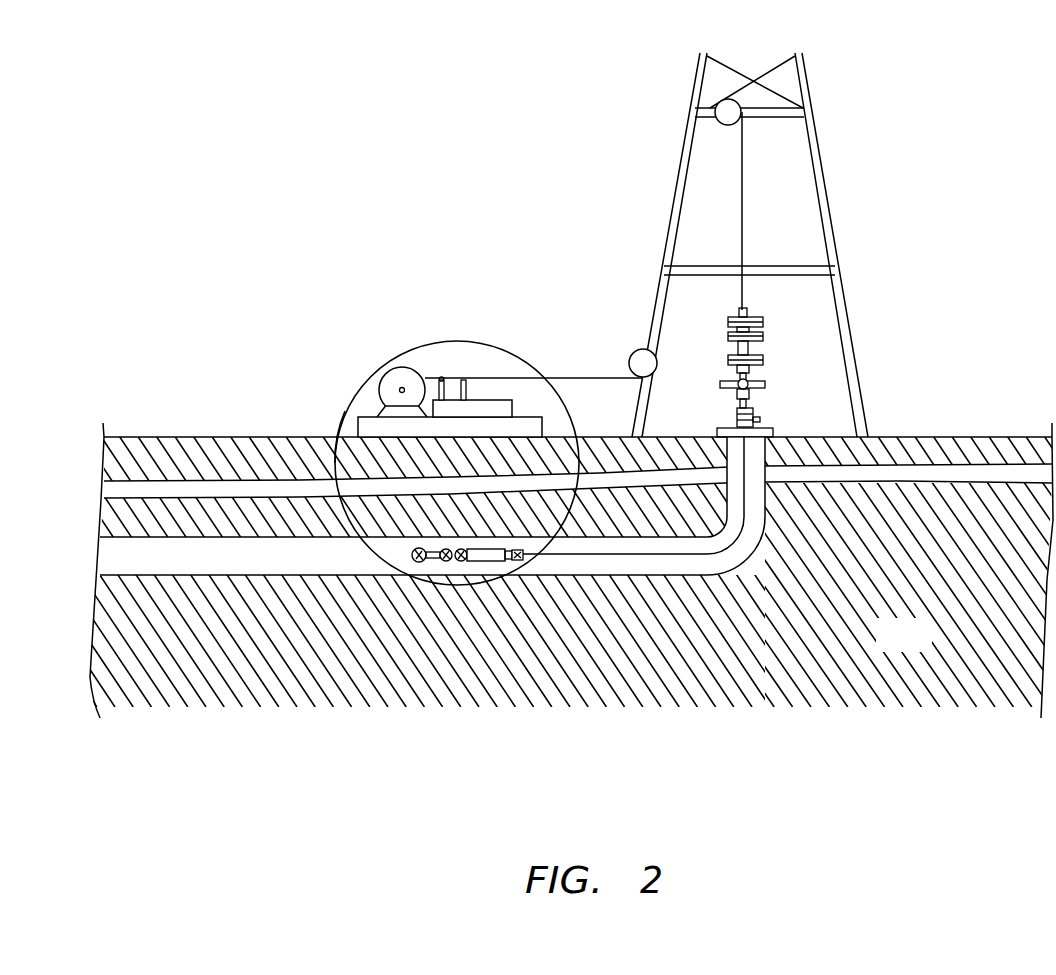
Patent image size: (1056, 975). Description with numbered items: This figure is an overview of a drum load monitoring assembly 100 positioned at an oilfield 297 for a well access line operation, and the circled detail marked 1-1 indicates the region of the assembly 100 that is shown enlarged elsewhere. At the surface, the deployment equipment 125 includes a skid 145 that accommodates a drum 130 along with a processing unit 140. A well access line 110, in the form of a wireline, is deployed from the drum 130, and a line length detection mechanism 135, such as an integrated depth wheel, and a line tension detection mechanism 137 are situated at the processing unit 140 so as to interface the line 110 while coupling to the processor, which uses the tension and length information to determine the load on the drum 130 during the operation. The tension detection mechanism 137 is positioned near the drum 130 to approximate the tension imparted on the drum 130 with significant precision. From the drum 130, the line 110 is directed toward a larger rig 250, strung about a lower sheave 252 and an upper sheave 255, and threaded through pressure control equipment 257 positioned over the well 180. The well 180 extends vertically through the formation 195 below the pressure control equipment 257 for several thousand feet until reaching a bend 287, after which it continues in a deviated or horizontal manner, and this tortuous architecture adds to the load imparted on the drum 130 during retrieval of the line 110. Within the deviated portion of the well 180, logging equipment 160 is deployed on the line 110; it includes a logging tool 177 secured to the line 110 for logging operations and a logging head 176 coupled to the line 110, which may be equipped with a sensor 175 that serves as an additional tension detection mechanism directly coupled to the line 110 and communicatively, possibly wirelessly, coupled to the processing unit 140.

The drum load monitoring assembly 100 is at (427, 406).
The well access line 110 is at (698, 178).
The deployment equipment 125 is at (351, 390).
The section view indicator 1-1 is at (345, 422).
The drum 130 is at (392, 375).
The line length detection mechanism 135 is at (442, 360).
The line tension detection mechanism 137 is at (465, 362).
The processing unit 140 is at (503, 404).
The skid 145 is at (541, 427).
The logging equipment 160 is at (415, 649).
The sensor 175 is at (510, 562).
The logging head 176 is at (495, 562).
The logging tool 177 is at (433, 572).
The well 180 is at (200, 567).
The formation 195 is at (925, 646).
The rig 250 is at (870, 114).
The lower sheave 252 is at (641, 362).
The upper sheave 255 is at (726, 110).
The pressure control equipment 257 is at (792, 316).
The bend 287 is at (750, 562).
The oilfield 297 is at (1015, 437).